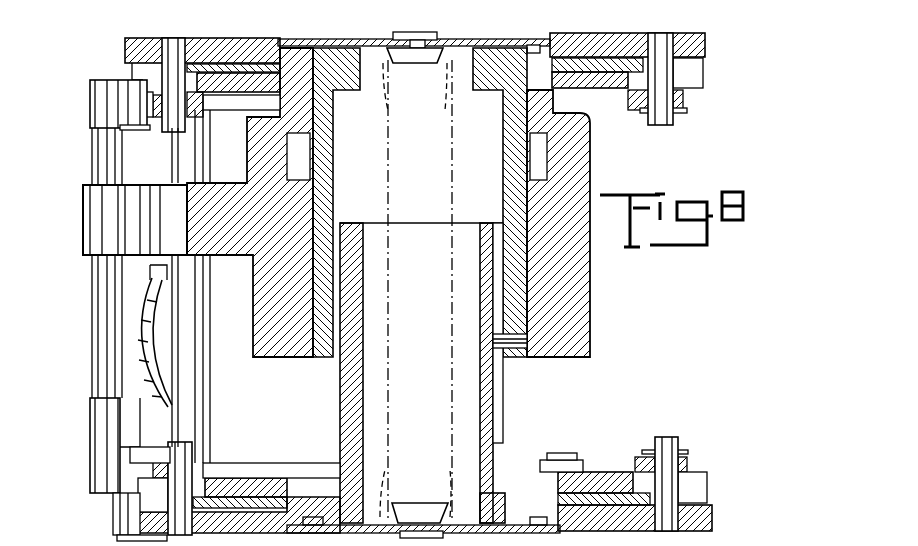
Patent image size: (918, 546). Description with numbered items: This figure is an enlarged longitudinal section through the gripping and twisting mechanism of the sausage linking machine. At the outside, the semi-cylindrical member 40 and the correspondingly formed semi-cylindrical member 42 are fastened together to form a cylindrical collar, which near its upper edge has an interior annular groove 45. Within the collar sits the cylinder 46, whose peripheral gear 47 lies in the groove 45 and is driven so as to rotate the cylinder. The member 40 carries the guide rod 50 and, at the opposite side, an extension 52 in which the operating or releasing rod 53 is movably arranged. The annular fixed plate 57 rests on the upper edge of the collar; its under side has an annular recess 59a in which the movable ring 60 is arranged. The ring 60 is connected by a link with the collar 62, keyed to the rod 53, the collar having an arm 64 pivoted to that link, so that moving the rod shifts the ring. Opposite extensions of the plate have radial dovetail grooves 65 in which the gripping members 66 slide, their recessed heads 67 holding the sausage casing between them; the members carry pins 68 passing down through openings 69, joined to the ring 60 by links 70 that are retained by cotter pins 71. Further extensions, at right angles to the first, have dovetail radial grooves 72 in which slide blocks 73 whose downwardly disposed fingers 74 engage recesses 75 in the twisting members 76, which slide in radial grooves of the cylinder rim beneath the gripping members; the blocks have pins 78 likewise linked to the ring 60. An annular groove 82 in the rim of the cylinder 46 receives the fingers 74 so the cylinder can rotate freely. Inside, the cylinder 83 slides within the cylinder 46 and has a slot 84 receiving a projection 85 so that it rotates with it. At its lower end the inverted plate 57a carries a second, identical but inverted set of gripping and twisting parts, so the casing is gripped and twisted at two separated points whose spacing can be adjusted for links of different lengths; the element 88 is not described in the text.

The semi-cylindrical member 40 is at (262, 292).
The semi-cylindrical member 42 is at (572, 285).
The interior annular groove 45 is at (547, 163).
The cylinder 46 is at (513, 110).
The peripheral gear 47 is at (313, 157).
The guide rod 50 is at (193, 380).
The extension 52 is at (108, 220).
The operating rod 53 is at (125, 322).
The annular fixed plate 57 is at (598, 65).
The inverted plate 57a is at (590, 475).
The annular recess 59a is at (272, 53).
The movable ring 60 is at (230, 75).
The collar 62 is at (143, 87).
The arm 64 is at (130, 128).
The radial dovetail grooves 65 is at (205, 65).
The gripping members 66 is at (195, 50).
The recessed heads 67 is at (400, 45).
The pins 68 is at (668, 80).
The openings 69 is at (130, 90).
The links 70 is at (242, 102).
The cotter pins 71 is at (157, 120).
The dovetail radial grooves 72 is at (415, 65).
The blocks 73 is at (430, 40).
The fingers 74 is at (409, 541).
The recesses 75 is at (463, 541).
The twisting members 76 is at (356, 541).
The pins 78 is at (266, 541).
The annular groove 82 is at (320, 40).
The cylinder 83 is at (420, 290).
The slot 84 is at (500, 397).
The projection 85 is at (497, 340).
The tube 88 is at (358, 402).